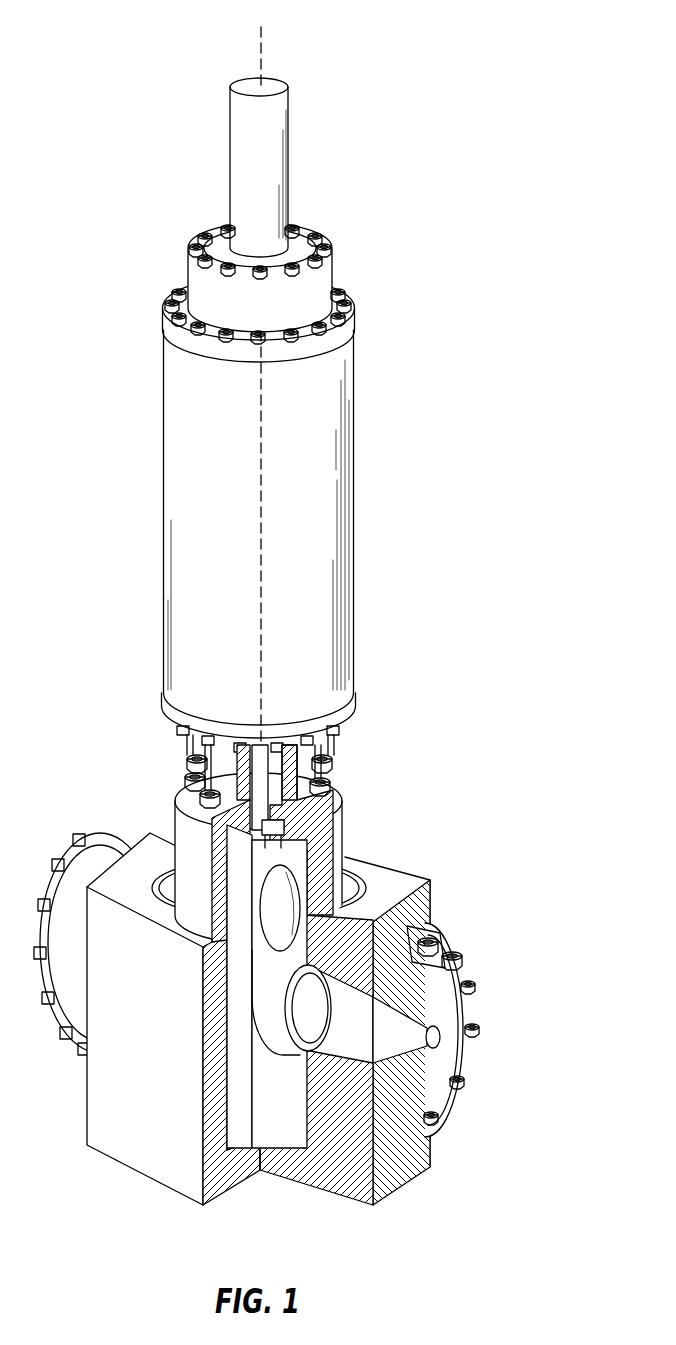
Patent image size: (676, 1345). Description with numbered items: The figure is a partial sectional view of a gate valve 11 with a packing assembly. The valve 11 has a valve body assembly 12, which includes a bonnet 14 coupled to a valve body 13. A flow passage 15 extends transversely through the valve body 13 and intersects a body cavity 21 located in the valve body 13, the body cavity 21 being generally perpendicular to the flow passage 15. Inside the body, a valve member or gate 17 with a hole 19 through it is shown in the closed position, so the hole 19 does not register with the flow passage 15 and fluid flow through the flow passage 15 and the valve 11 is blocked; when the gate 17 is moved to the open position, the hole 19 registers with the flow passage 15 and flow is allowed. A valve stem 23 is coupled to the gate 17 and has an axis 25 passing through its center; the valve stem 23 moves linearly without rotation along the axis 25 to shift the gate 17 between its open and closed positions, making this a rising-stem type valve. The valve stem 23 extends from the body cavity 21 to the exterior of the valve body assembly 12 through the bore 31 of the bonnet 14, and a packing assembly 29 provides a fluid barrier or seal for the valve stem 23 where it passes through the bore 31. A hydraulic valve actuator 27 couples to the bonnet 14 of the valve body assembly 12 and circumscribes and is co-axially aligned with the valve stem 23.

The valve 11 is at (328, 400).
The valve body assembly 12 is at (285, 980).
The valve body 13 is at (256, 1018).
The bonnet 14 is at (183, 825).
The flow passage 15 is at (362, 1020).
The gate 17 is at (357, 984).
The hole 19 is at (275, 908).
The body cavity 21 is at (300, 1137).
The valve stem 23 is at (260, 763).
The axis 25 is at (266, 45).
The valve actuator 27 is at (406, 487).
The packing assembly 29 is at (288, 778).
The bore 31 is at (273, 820).